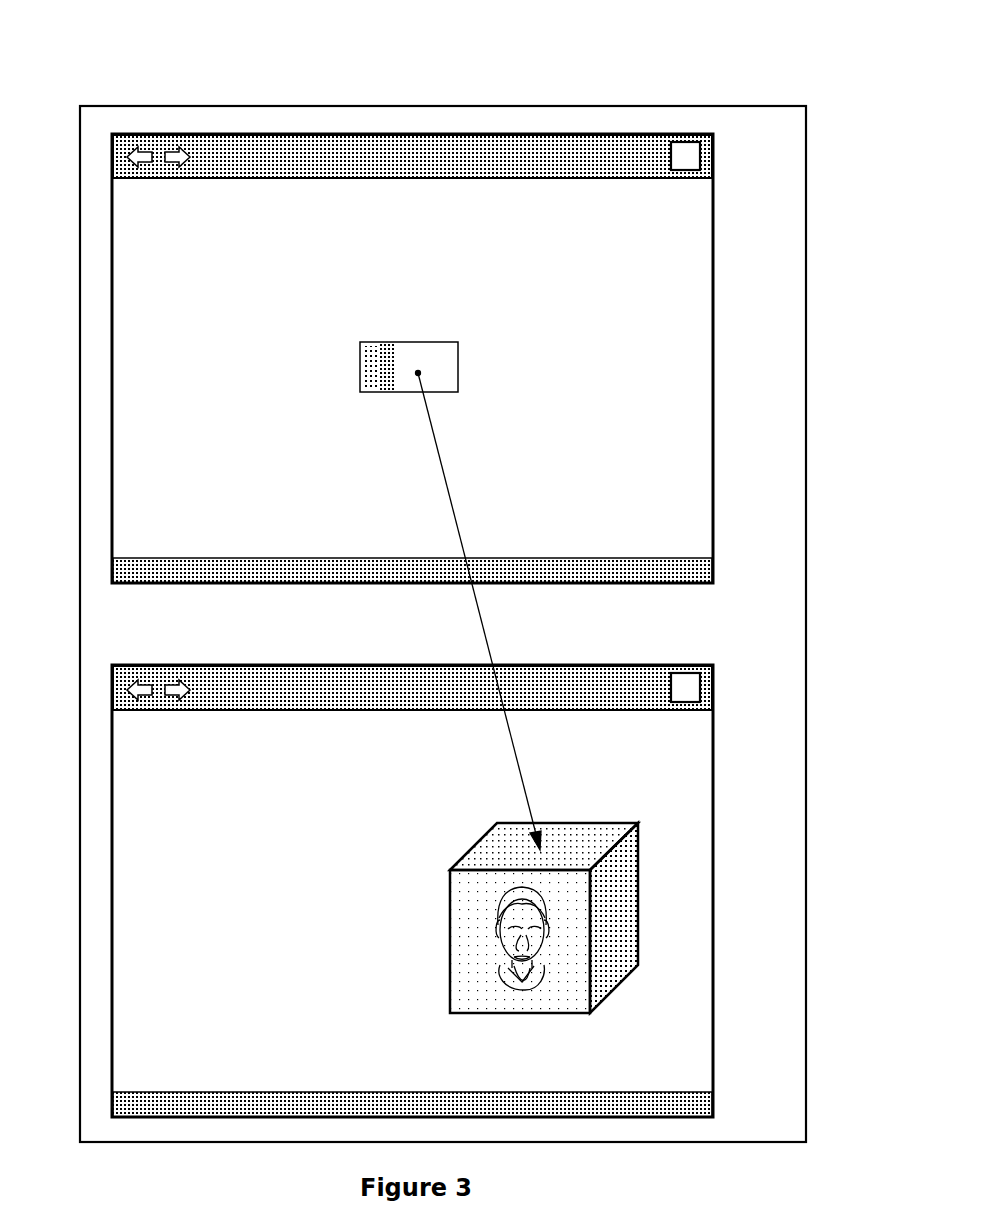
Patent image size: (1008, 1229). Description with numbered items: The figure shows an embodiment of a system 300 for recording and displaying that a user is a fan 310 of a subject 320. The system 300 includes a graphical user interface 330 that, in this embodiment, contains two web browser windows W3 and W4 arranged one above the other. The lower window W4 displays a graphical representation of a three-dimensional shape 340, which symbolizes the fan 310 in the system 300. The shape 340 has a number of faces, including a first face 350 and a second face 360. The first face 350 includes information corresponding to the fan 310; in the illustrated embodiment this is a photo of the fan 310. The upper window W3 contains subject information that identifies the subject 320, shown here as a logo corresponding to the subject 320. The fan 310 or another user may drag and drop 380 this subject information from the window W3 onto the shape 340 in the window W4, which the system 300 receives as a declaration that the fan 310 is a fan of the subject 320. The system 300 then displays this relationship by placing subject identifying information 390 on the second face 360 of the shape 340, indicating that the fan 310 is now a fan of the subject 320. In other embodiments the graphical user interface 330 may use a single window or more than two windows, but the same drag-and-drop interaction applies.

The system 300 is at (462, 69).
The graphical user interface 330 is at (806, 248).
The web browser window W3 is at (713, 319).
The web browser window W4 is at (713, 802).
The subject 320 is at (365, 355).
The drag and drop 380 is at (474, 605).
The three-dimensional shape 340 is at (463, 857).
The fan 310 is at (495, 940).
The first face 350 is at (555, 995).
The second face 360 is at (622, 970).
The subject identifying information 390 is at (636, 912).